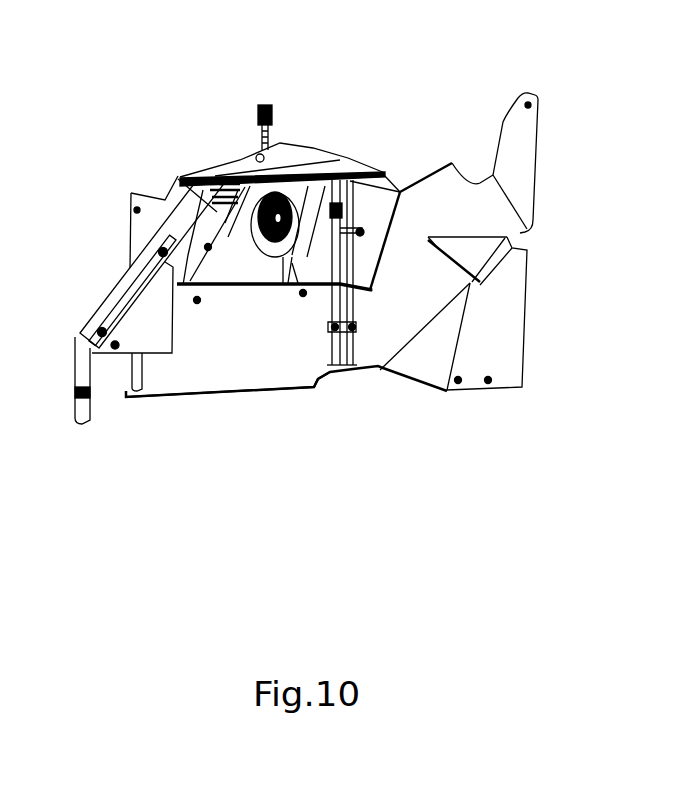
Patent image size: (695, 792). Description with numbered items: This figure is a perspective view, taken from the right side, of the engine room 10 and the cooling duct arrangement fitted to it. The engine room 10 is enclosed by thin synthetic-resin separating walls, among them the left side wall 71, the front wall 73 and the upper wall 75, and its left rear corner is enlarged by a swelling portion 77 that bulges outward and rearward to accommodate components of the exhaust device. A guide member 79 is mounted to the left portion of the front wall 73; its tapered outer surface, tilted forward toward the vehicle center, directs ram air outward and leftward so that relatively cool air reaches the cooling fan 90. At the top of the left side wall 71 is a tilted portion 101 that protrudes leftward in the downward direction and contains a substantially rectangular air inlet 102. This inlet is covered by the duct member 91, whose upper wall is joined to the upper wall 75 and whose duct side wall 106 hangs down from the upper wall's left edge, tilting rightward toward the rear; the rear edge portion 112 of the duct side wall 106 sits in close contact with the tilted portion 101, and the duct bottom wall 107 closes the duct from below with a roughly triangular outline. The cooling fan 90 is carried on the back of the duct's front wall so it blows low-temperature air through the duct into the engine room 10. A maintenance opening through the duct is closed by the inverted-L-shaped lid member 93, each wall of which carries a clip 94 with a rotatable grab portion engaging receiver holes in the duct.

The engine room 10 is at (388, 298).
The left side wall 71 is at (292, 363).
The front wall 73 is at (355, 307).
The upper wall 75 is at (370, 153).
The swelling portion 77 is at (117, 283).
The guide member 79 is at (535, 168).
The cooling fan 90 is at (308, 225).
The duct member 91 is at (318, 175).
The lid member 93 is at (240, 160).
The clip 94 is at (257, 160).
The tilted portion 101 is at (292, 263).
The air inlet 102 is at (338, 155).
The duct side wall 106 is at (187, 263).
The duct bottom wall 107 is at (228, 270).
The rear edge portion 112 is at (175, 179).